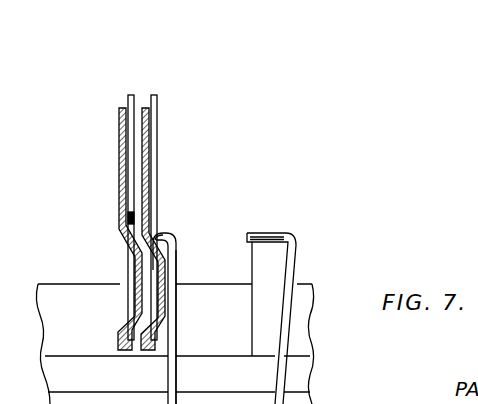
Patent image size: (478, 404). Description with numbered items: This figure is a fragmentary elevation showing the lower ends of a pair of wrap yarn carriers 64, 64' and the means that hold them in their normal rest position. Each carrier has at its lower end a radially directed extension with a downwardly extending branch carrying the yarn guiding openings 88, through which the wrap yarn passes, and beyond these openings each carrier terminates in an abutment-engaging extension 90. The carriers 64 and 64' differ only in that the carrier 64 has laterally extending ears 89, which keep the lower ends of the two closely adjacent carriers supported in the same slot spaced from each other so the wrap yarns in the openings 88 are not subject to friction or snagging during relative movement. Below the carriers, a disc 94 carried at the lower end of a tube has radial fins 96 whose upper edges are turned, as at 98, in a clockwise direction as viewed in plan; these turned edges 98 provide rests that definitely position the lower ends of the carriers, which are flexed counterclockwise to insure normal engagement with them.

The wrap yarn carrier 64 is at (167, 217).
The wrap yarn carrier 64' is at (157, 217).
The yarn guiding opening 88 is at (166, 250).
The laterally extending ear 89 is at (128, 220).
The abutment-engaging extension 90 is at (131, 244).
The disc 94 is at (226, 294).
The radial fin 96 is at (176, 284).
The turned upper edge 98 is at (166, 234).